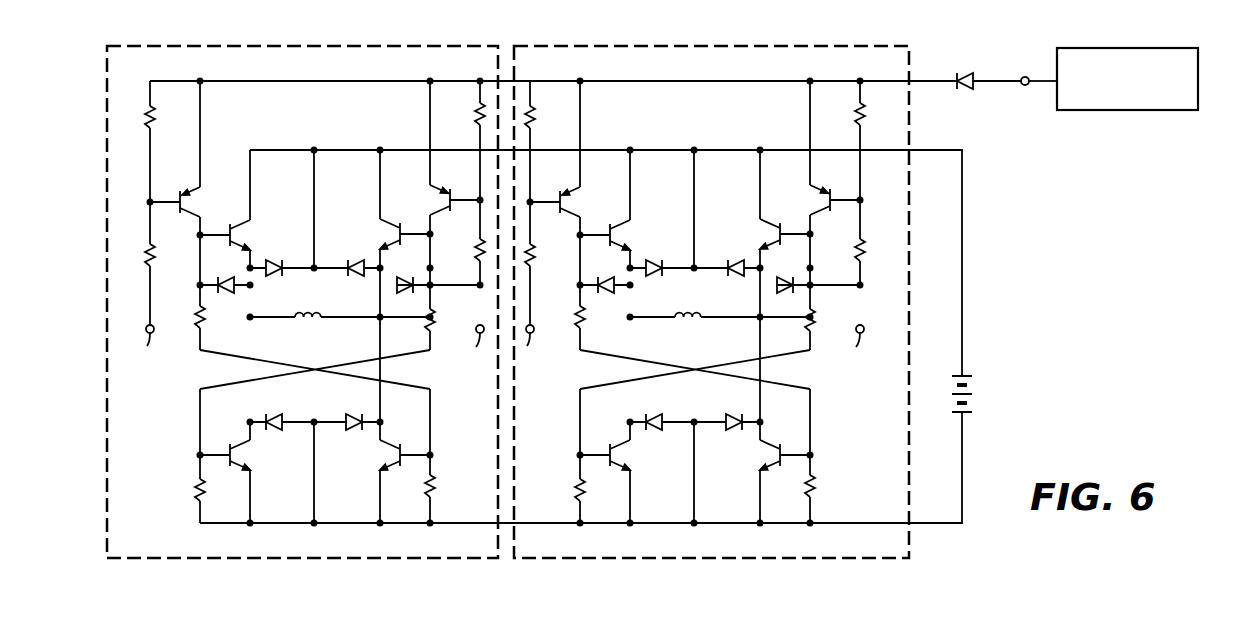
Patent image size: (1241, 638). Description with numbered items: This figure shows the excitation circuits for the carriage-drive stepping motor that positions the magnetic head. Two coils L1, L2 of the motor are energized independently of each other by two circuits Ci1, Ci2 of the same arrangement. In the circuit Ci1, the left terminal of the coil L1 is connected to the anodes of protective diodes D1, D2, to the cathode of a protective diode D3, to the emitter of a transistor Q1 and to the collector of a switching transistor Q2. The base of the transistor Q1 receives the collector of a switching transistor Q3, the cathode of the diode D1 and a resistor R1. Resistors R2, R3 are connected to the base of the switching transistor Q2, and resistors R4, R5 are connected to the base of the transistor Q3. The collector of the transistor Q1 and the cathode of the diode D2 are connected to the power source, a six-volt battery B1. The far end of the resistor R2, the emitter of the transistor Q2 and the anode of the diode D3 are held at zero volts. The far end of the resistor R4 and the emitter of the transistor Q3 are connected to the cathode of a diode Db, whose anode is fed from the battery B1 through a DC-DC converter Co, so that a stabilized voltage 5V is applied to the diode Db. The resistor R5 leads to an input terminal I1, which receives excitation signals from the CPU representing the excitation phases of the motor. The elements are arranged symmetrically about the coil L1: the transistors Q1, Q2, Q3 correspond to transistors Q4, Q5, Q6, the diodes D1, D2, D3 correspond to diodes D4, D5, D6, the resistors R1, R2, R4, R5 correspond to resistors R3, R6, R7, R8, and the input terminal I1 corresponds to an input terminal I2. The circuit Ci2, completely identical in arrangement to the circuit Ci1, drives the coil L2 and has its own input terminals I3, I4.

The excitation circuit Ci1 is at (365, 558).
The excitation circuit Ci2 is at (707, 558).
The resistor R1 is at (181, 317).
The resistor R2 is at (177, 456).
The resistor R3 is at (446, 317).
The resistor R4 is at (165, 141).
The resistor R5 is at (166, 263).
The resistor R6 is at (447, 456).
The resistor R7 is at (459, 140).
The resistor R8 is at (461, 242).
The transistor Q1 is at (236, 209).
The switching transistor Q2 is at (241, 472).
The switching transistor Q3 is at (190, 158).
The transistor Q4 is at (388, 209).
The switching transistor Q5 is at (389, 472).
The switching transistor Q6 is at (437, 157).
The protective diode D1 is at (225, 300).
The protective diode D2 is at (282, 282).
The protective diode D3 is at (282, 407).
The protective diode D4 is at (435, 300).
The protective diode D5 is at (347, 283).
The protective diode D6 is at (347, 408).
The coil L1 is at (340, 331).
The coil L2 is at (692, 338).
The input terminal I1 is at (150, 350).
The input terminal I2 is at (470, 350).
The input terminal I3 is at (543, 363).
The input terminal I4 is at (857, 363).
The diode Db is at (984, 95).
The stabilized voltage 5V is at (1031, 98).
The DC-DC converter Co is at (1130, 110).
The battery B1 is at (980, 394).